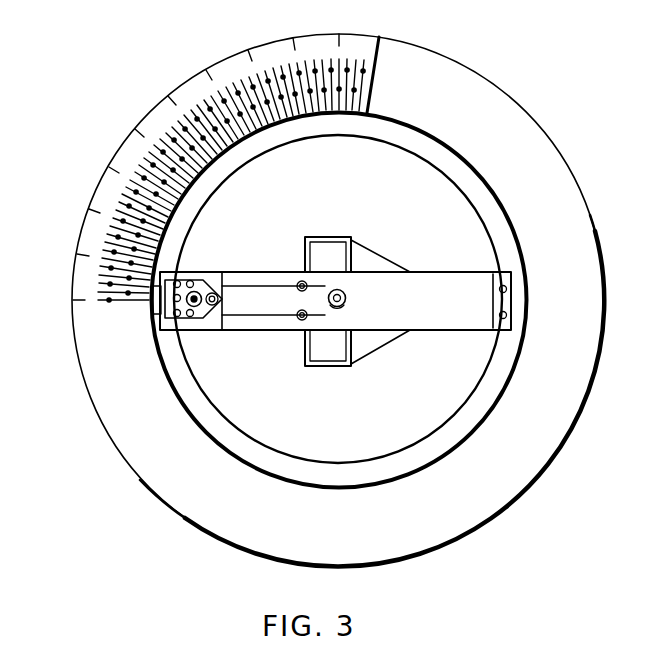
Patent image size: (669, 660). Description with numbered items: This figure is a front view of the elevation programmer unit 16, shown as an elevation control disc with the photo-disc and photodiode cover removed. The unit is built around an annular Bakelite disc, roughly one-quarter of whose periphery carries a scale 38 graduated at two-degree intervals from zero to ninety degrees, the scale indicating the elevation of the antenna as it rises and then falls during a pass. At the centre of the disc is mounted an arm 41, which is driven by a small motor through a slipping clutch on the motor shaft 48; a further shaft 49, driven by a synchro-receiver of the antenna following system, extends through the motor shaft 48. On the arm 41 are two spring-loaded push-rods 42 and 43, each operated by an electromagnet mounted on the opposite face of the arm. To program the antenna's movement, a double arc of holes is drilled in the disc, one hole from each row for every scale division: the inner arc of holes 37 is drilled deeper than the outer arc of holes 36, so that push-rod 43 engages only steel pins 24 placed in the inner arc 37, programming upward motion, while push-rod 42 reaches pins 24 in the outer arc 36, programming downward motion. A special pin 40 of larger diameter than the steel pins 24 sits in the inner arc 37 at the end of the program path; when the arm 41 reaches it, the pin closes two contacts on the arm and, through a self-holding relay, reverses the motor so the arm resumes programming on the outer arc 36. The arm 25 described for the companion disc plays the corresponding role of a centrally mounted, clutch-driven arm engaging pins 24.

The elevation programmer unit 16 is at (573, 437).
The arm 25 is at (523, 108).
The steel pins 24 is at (106, 240).
The scale 38 is at (201, 95).
The outer arc of holes 36 is at (379, 50).
The inner arc of holes 37 is at (368, 98).
The special pin 40 is at (168, 231).
The arm 41 is at (421, 322).
The push-rod 42 is at (248, 286).
The push-rod 43 is at (248, 316).
The motor shaft 48 is at (344, 291).
The shaft 49 is at (345, 305).